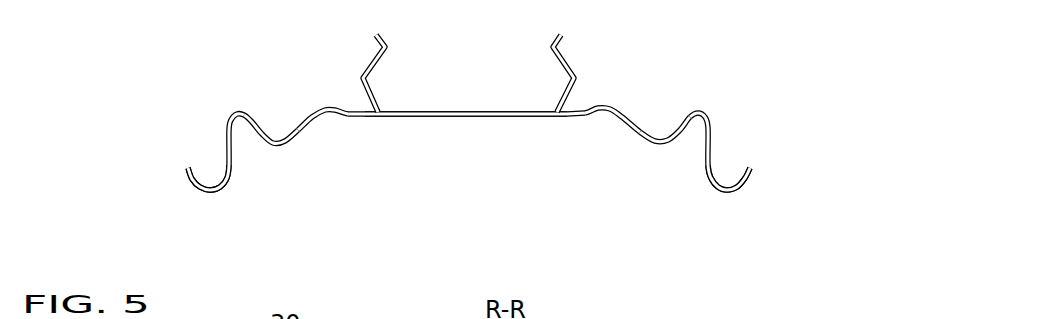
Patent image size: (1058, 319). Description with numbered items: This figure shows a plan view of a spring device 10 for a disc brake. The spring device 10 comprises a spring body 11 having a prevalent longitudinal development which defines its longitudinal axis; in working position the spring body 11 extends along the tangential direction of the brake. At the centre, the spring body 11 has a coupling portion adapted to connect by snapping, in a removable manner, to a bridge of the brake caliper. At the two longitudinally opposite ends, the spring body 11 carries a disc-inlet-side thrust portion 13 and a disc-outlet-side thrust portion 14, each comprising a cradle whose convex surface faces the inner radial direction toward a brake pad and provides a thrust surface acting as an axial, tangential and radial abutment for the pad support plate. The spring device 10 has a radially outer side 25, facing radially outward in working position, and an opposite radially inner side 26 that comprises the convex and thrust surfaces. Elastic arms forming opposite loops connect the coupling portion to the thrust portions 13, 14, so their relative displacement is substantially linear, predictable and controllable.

The spring device 10 is at (472, 141).
The spring body 11 is at (385, 120).
The disc-inlet-side thrust portion 13 is at (214, 150).
The disc-outlet-side thrust portion 14 is at (724, 158).
The radially outer side 25 is at (452, 107).
The radially inner side 26 is at (212, 198).